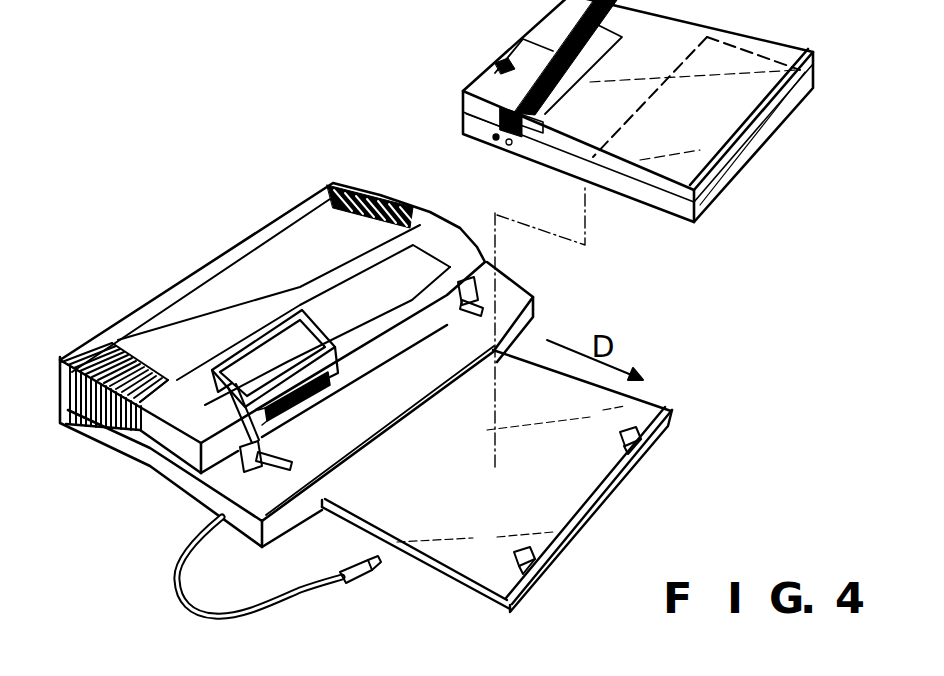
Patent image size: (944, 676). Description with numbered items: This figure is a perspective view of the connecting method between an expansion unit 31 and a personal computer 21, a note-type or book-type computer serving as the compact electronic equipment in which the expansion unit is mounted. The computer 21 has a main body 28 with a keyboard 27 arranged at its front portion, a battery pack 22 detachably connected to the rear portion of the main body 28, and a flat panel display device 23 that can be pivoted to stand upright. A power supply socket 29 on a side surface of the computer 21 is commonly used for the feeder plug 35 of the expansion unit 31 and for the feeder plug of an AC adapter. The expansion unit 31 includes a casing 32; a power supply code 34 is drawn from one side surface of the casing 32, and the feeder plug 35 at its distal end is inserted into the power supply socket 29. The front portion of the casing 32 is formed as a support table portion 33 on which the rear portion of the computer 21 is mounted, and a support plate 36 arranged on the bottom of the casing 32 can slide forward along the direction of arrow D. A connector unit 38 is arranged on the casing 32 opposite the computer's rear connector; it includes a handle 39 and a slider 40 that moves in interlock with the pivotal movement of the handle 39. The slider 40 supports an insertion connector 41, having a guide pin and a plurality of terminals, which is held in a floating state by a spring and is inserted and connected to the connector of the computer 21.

The personal computer 21 is at (735, 189).
The battery pack 22 is at (483, 84).
The flat panel display device 23 is at (760, 102).
The keyboard 27 is at (747, 153).
The main body 28 is at (462, 127).
The power supply socket 29 is at (509, 144).
The expansion unit 31 is at (306, 186).
The casing 32 is at (258, 262).
The support table portion 33 is at (378, 424).
The power supply code 34 is at (278, 607).
The feeder plug 35 is at (362, 580).
The support plate 36 is at (603, 484).
The connector unit 38 is at (284, 372).
The handle 39 is at (228, 358).
The slider 40 is at (262, 438).
The insertion connector 41 is at (325, 400).